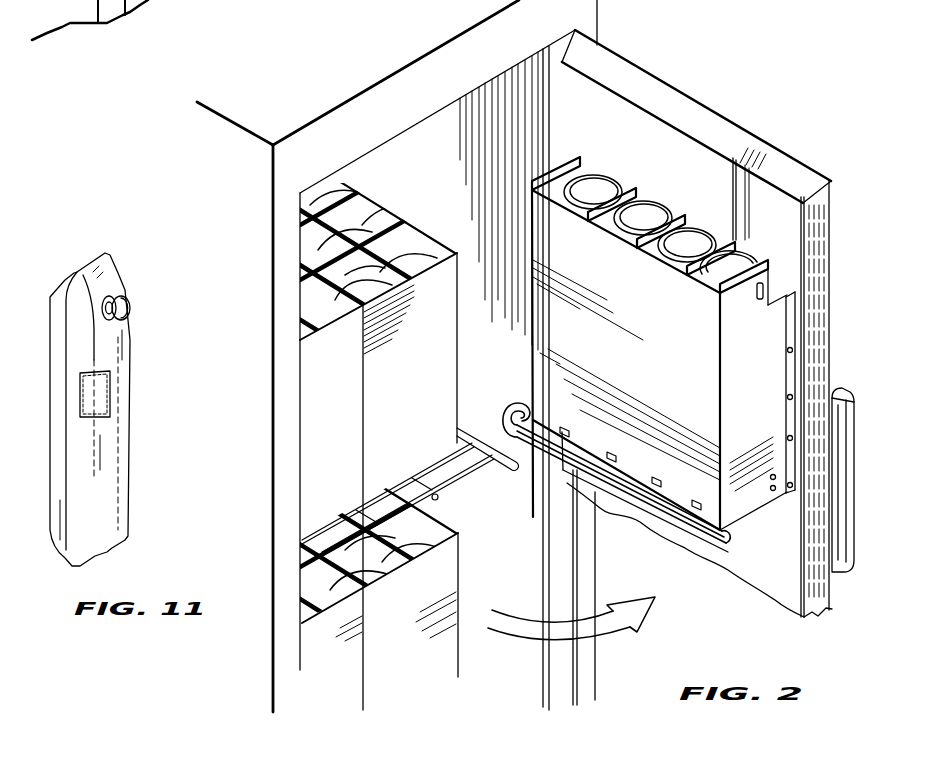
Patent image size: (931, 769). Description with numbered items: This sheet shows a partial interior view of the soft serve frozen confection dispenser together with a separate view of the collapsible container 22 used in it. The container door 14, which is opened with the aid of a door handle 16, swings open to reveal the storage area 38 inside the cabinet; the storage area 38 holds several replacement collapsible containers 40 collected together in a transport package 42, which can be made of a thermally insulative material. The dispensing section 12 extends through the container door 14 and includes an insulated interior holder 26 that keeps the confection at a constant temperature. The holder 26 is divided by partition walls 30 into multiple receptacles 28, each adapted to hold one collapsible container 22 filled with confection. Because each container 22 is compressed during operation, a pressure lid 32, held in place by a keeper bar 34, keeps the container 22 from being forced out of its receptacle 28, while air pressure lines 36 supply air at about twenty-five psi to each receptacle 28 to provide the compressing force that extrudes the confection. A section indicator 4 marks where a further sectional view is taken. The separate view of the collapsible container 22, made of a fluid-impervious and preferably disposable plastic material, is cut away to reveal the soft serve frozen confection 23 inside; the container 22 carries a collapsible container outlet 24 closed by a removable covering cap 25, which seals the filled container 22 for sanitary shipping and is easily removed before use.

In FIG. 2, the section line 4- 4 is at (652, 37).
In FIG. 2, the dispensing section 12 is at (766, 372).
In FIG. 2, the container door 14 is at (770, 562).
In FIG. 2, the door handle 16 is at (848, 464).
In FIG. 11, the collapsible container 22 is at (108, 467).
In FIG. 11, the soft serve frozen confection 23 is at (100, 395).
In FIG. 11, the collapsible container outlet 24 is at (111, 297).
In FIG. 11, the removable covering cap 25 is at (128, 309).
In FIG. 2, the insulated interior holder 26 is at (684, 386).
In FIG. 2, the receptacle 28 is at (752, 244).
In FIG. 2, the partition wall 30 is at (725, 241).
In FIG. 2, the pressure lid 32 is at (748, 250).
In FIG. 2, the keeper bar 34 is at (753, 293).
In FIG. 2, the air pressure line 36 is at (700, 550).
In FIG. 2, the storage area 38 is at (397, 165).
In FIG. 2, the replacement collapsible container 40 is at (375, 217).
In FIG. 2, the transport package 42 is at (317, 367).